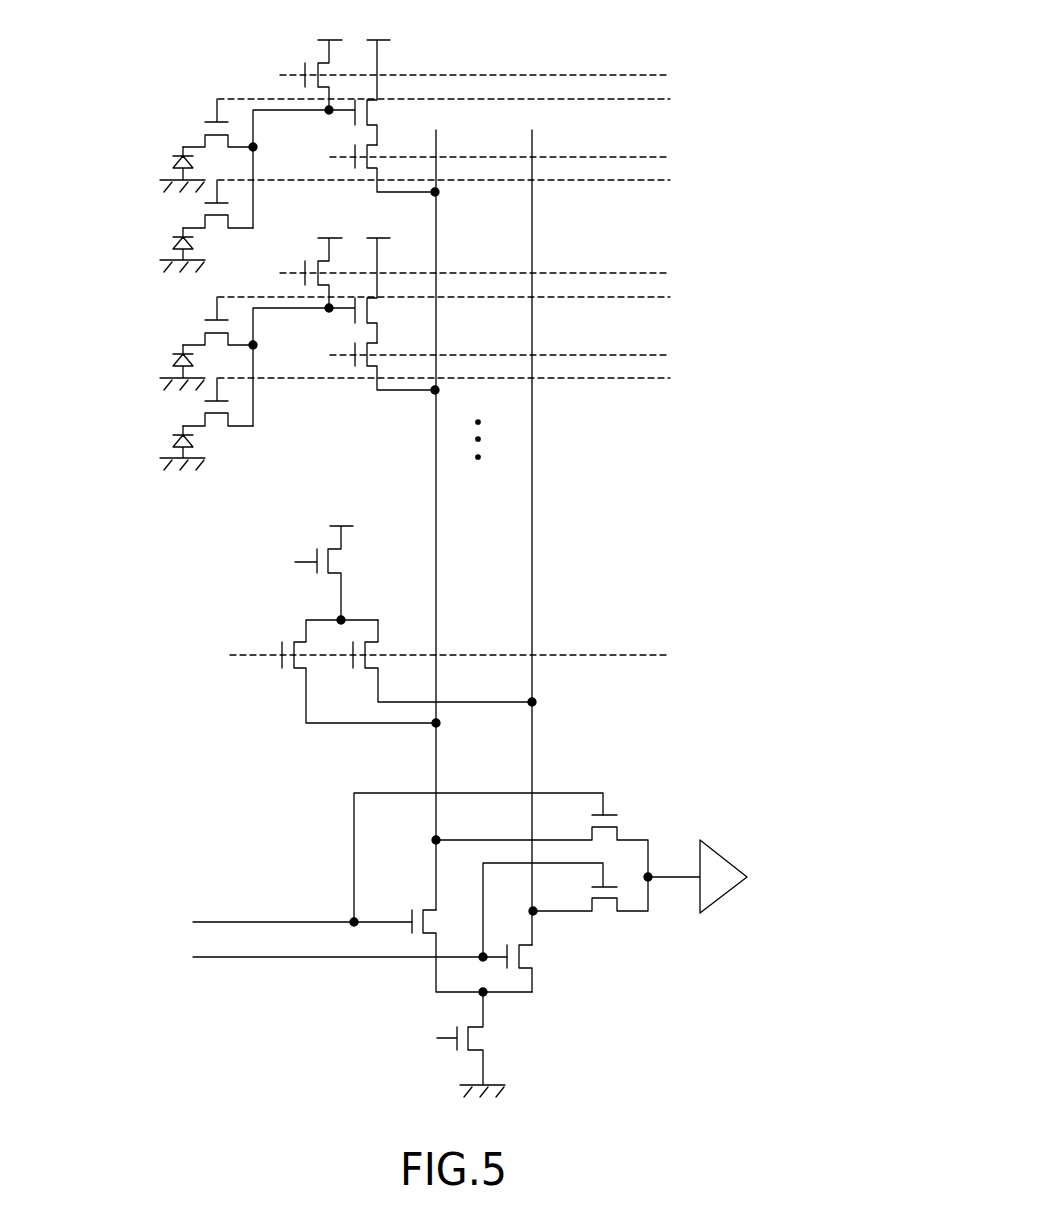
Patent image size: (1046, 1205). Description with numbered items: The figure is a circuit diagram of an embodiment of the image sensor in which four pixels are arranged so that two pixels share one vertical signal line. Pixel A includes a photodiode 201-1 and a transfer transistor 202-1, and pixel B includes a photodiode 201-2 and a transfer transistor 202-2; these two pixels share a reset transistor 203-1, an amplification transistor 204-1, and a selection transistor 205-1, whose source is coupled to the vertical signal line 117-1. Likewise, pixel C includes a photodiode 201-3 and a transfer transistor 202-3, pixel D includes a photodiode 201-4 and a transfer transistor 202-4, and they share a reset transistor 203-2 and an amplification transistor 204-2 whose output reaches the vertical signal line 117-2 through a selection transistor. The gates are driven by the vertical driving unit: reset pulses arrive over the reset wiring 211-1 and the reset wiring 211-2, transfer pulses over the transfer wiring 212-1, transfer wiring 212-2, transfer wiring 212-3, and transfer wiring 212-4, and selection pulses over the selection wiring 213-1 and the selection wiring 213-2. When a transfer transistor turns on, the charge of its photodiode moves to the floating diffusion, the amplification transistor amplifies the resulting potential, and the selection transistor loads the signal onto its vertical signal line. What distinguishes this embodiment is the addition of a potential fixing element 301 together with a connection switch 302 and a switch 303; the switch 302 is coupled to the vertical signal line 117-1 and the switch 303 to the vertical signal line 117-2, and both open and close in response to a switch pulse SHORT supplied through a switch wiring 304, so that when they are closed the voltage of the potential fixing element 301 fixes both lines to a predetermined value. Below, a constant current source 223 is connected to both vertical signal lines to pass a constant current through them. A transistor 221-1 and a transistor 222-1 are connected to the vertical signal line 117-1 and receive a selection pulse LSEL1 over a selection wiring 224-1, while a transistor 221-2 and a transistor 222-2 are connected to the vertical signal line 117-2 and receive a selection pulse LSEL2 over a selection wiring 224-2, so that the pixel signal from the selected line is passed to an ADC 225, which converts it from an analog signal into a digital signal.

The photodiode 201-1 is at (173, 158).
The photodiode 201-2 is at (173, 241).
The photodiode 201-3 is at (173, 356).
The photodiode 201-4 is at (173, 438).
The transfer transistor 202-1 is at (205, 130).
The transfer transistor 202-2 is at (205, 210).
The transfer transistor 202-3 is at (205, 328).
The transfer transistor 202-4 is at (205, 408).
The reset transistor 203-1 is at (305, 75).
The reset transistor 203-2 is at (305, 273).
The amplification transistor 204-1 is at (377, 111).
The amplification transistor 204-2 is at (377, 309).
The selection transistor 205-1 is at (355, 155).
The reset wiring 211-1 is at (652, 77).
The reset wiring 211-2 is at (652, 275).
The transfer wiring 212-1 is at (652, 101).
The transfer wiring 212-2 is at (652, 182).
The transfer wiring 212-3 is at (652, 299).
The transfer wiring 212-4 is at (652, 380).
The selection wiring 213-1 is at (652, 159).
The selection wiring 213-2 is at (652, 357).
The vertical signal line 117-1 is at (436, 470).
The vertical signal line 117-2 is at (533, 471).
The potential fixing element 301 is at (317, 559).
The connection switch 302 is at (282, 649).
The switch 303 is at (372, 651).
The switch wiring 304 is at (652, 657).
The transistor 221-1 is at (412, 911).
The transistor 221-2 is at (533, 957).
The transistor 222-1 is at (604, 814).
The transistor 222-2 is at (603, 912).
The constant current source 223 is at (486, 1039).
The selection wiring 224-1 is at (213, 920).
The selection wiring 224-2 is at (212, 960).
The ADC 225 is at (727, 897).